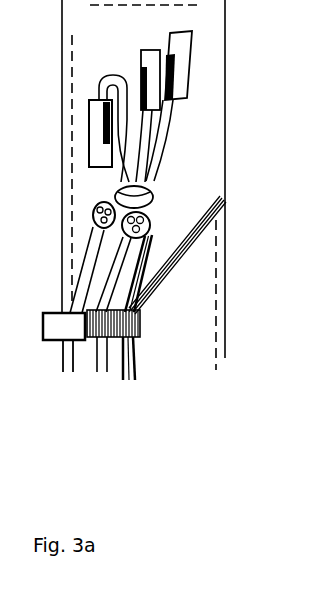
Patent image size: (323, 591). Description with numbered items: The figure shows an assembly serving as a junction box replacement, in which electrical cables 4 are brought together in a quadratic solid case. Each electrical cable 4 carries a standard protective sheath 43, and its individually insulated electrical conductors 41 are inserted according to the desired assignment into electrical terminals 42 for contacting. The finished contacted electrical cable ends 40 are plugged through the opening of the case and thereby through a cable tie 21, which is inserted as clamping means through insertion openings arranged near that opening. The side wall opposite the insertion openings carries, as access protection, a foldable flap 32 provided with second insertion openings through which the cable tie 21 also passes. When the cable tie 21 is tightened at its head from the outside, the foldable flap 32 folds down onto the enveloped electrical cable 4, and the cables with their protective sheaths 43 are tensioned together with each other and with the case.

The electrical cable 4 is at (88, 286).
The cable tie 21 is at (133, 330).
The foldable flap 32 is at (196, 241).
The electrical cable end 40 is at (151, 225).
The electrical conductor 41 is at (173, 126).
The electrical terminal 42 is at (173, 57).
The protective sheath 43 is at (123, 266).